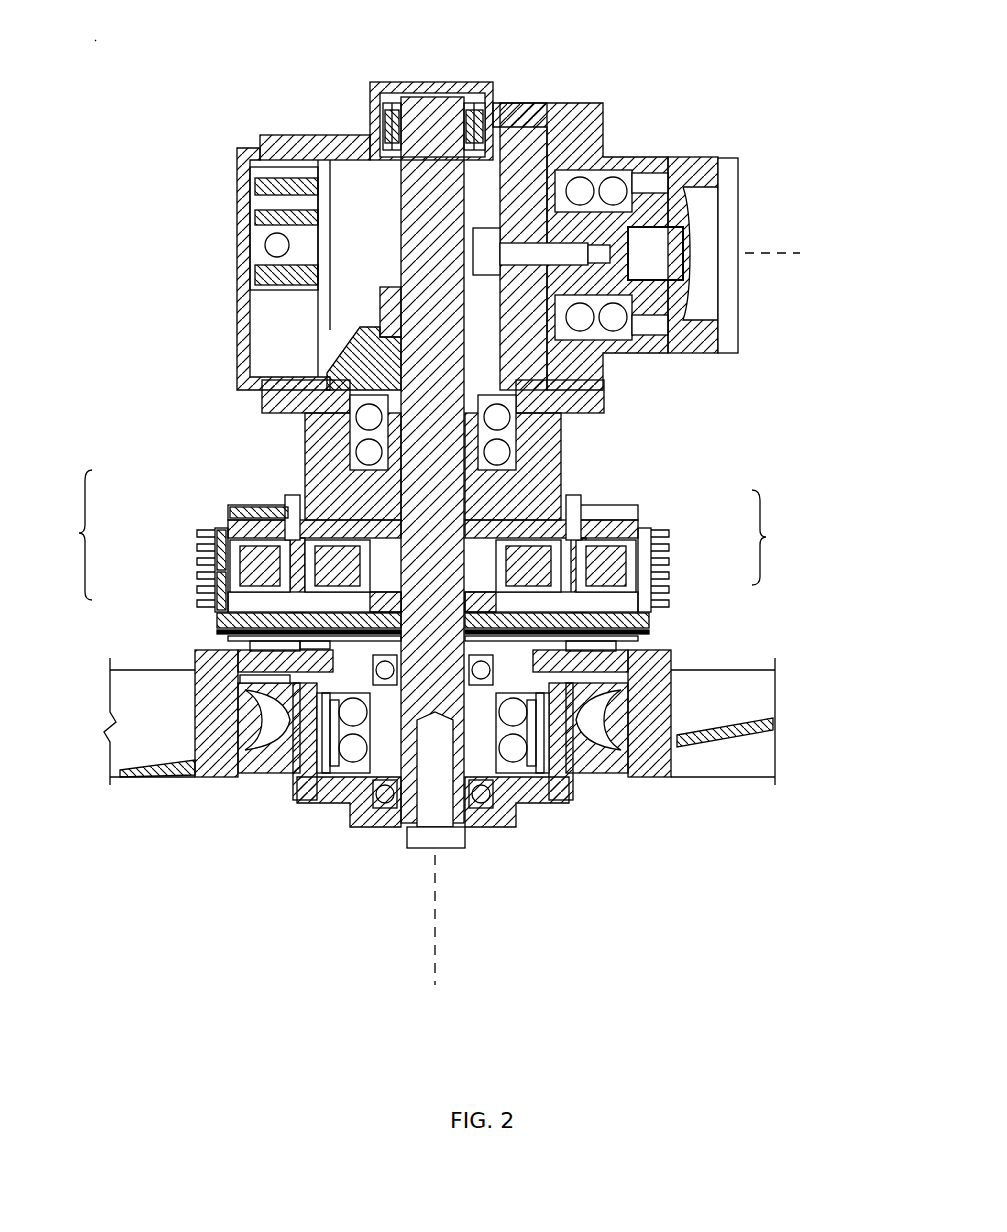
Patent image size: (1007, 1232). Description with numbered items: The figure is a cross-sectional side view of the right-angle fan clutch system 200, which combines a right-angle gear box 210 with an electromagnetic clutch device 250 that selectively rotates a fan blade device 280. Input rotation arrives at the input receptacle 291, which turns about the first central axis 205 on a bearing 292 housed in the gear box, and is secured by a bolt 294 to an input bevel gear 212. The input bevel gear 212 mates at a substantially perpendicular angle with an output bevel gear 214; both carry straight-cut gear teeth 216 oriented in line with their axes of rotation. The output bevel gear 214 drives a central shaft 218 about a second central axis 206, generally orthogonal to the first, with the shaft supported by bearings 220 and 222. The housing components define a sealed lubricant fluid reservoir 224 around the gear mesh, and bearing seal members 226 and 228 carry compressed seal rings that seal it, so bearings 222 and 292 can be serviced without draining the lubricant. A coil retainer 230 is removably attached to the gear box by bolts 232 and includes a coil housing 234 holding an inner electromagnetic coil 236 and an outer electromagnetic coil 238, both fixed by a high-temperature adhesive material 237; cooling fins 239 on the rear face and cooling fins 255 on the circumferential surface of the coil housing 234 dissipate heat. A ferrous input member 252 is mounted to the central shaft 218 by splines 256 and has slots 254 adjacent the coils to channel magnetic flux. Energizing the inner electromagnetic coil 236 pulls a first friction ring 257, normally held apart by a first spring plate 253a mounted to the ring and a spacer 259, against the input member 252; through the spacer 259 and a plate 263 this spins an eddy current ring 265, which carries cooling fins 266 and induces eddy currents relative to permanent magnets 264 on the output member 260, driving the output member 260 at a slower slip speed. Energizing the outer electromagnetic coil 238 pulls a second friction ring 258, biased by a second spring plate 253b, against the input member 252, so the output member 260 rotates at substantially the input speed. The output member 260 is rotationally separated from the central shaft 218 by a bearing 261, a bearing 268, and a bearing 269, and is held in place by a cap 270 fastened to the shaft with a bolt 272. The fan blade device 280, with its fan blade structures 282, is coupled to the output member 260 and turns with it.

The right-angle fan clutch system 200 is at (99, 31).
The first central axis 205 is at (800, 258).
The second central axis 206 is at (440, 985).
The right-angle gear box 210 is at (262, 140).
The input bevel gear 212 is at (556, 125).
The output bevel gear 214 is at (348, 355).
The gear teeth 216 is at (518, 160).
The central shaft 218 is at (430, 95).
The bearing 220 is at (385, 115).
The bearing 222 is at (504, 432).
The lubricant fluid reservoir 224 is at (262, 178).
The bearing seal member 226 is at (607, 180).
The bearing seal member 228 is at (265, 393).
The coil retainer 230 is at (778, 537).
The bolts 232 is at (298, 498).
The coil housing 234 is at (650, 540).
The inner electromagnetic coil 236 is at (665, 572).
The adhesive material 237 is at (578, 540).
The outer electromagnetic coil 238 is at (632, 548).
The cooling fins 239 is at (230, 506).
The electromagnetic clutch device 250 is at (70, 535).
The input member 252 is at (215, 530).
The first spring plate 253a is at (270, 645).
The second spring plate 253b is at (616, 645).
The slots 254 is at (218, 590).
The cooling fins 255 is at (215, 558).
The splines 256 is at (250, 505).
The first friction ring 257 is at (300, 644).
The second friction ring 258 is at (228, 638).
The spacer 259 is at (270, 690).
The output member 260 is at (570, 797).
The bearing 261 is at (345, 765).
The plate 263 is at (330, 770).
The permanent magnets 264 is at (700, 690).
The eddy current ring 265 is at (300, 750).
The cooling fins 266 is at (622, 762).
The bearing 268 is at (353, 770).
The bearing 269 is at (385, 805).
The cap 270 is at (520, 812).
The bolt 272 is at (445, 850).
The fan blade device 280 is at (665, 777).
The fan blade structures 282 is at (725, 777).
The input receptacle 291 is at (728, 160).
The bearing 292 is at (590, 235).
The bolt 294 is at (690, 348).